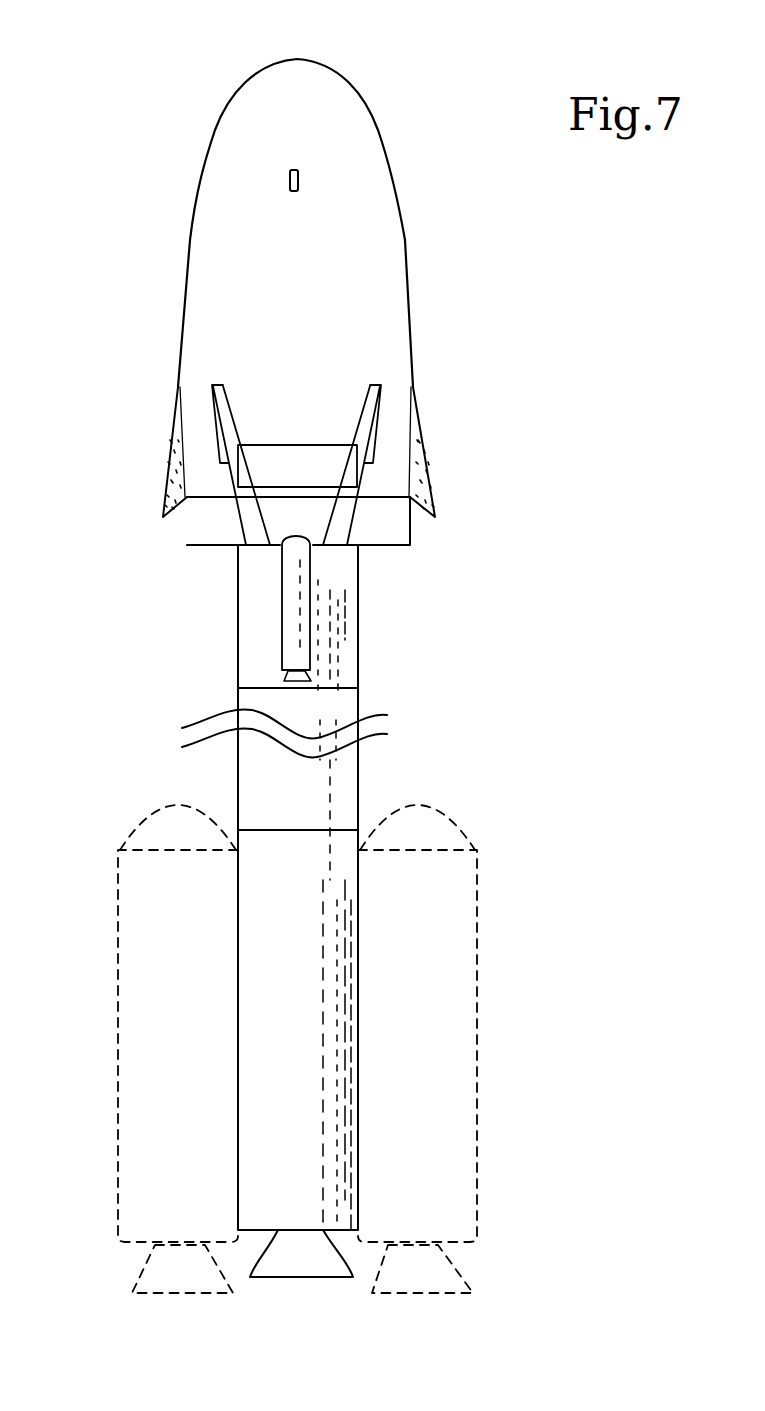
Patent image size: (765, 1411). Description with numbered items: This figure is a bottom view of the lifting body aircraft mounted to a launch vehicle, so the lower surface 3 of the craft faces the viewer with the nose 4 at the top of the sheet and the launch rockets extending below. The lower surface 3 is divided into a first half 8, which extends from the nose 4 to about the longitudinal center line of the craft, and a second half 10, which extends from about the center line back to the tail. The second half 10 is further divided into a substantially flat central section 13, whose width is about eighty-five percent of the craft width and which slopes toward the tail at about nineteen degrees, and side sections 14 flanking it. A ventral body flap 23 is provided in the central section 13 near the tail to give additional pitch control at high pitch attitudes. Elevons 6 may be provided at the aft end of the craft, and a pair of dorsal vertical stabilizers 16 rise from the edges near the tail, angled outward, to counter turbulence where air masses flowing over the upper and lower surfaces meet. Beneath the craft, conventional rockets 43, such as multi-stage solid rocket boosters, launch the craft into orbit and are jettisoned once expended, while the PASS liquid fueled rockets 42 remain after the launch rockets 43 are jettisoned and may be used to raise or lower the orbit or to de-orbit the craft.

The lower surface 3 is at (297, 258).
The nose 4 is at (297, 60).
The elevons 6 is at (197, 545).
The first half 8 is at (285, 125).
The second half 10 is at (293, 367).
The central section 13 is at (288, 410).
The side sections 14 is at (394, 396).
The dorsal vertical stabilizers 16 is at (163, 463).
The ventral body flap 23 is at (305, 458).
The PASS liquid fueled rockets 42 is at (333, 637).
The rockets 43 is at (303, 870).